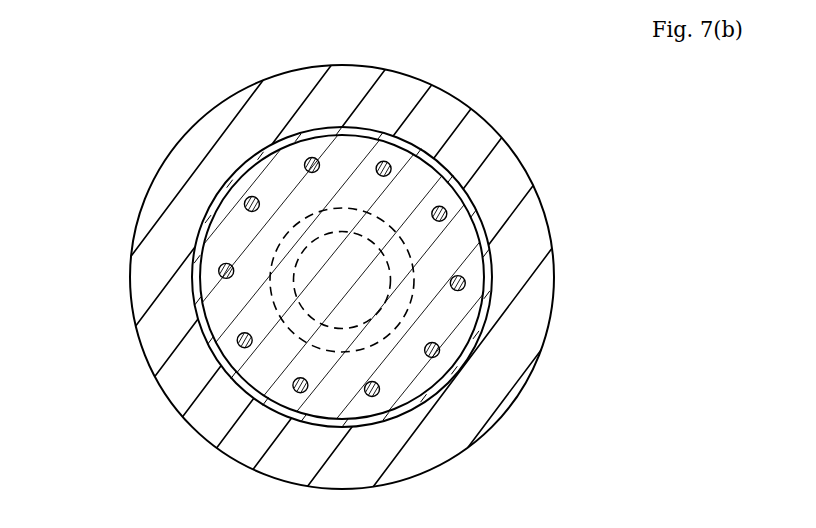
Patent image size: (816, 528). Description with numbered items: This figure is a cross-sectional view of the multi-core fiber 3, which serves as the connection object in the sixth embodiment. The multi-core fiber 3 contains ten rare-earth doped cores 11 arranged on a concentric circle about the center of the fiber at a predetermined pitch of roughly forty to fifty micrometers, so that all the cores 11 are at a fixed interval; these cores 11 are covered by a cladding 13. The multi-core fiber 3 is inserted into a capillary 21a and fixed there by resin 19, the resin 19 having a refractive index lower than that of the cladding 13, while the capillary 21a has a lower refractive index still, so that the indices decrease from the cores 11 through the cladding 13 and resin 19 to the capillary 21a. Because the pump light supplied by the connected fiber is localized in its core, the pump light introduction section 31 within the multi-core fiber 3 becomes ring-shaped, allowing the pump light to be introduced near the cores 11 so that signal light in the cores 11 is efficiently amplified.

The multi-core fiber 3 is at (479, 254).
The core 11 is at (462, 283).
The cladding 13 is at (256, 368).
The resin 19 is at (197, 246).
The capillary 21a is at (487, 412).
The pump light introduction section 31 is at (302, 232).